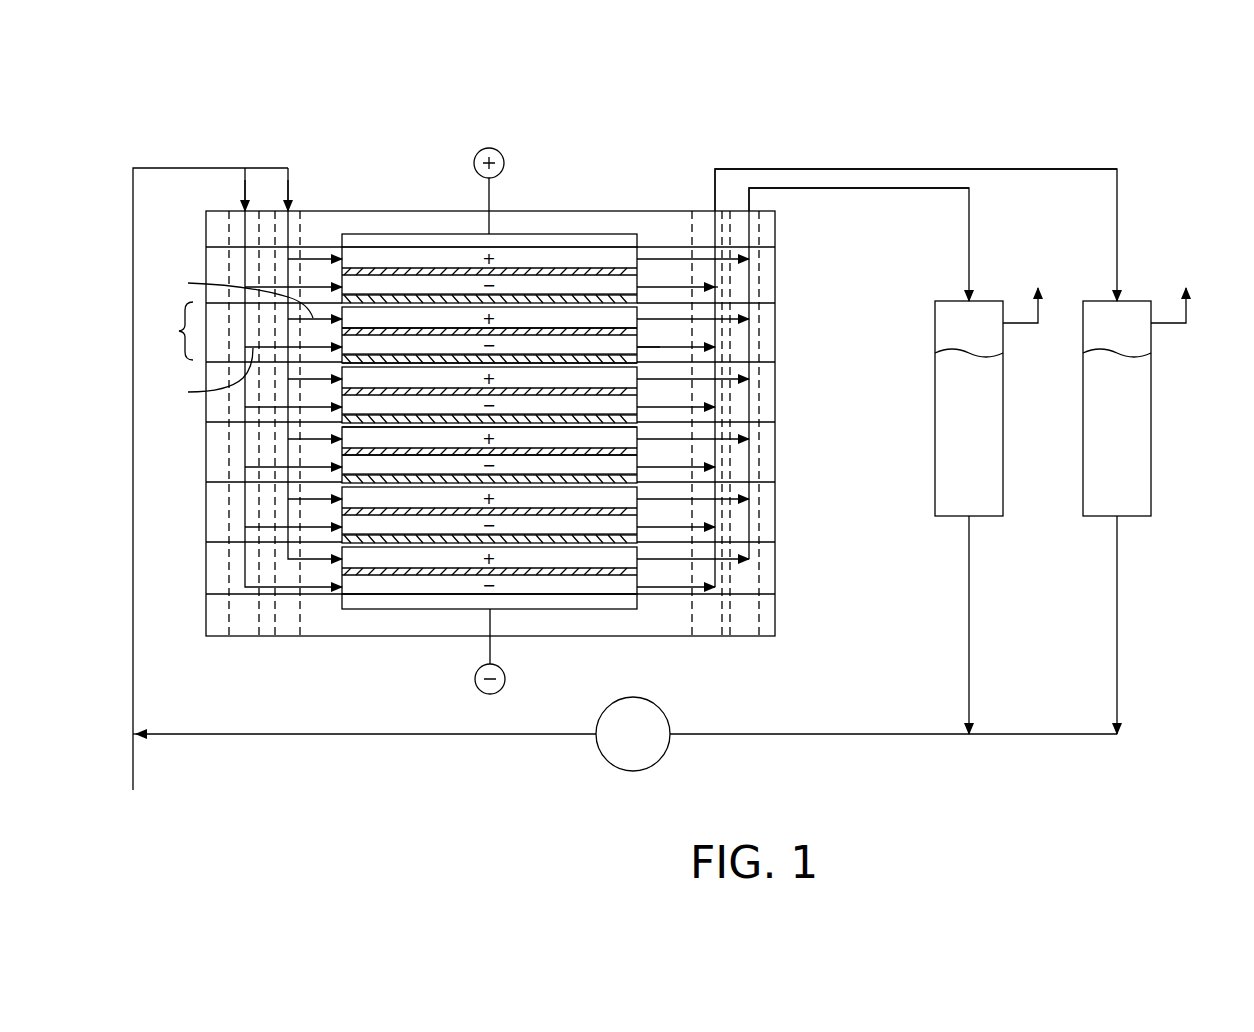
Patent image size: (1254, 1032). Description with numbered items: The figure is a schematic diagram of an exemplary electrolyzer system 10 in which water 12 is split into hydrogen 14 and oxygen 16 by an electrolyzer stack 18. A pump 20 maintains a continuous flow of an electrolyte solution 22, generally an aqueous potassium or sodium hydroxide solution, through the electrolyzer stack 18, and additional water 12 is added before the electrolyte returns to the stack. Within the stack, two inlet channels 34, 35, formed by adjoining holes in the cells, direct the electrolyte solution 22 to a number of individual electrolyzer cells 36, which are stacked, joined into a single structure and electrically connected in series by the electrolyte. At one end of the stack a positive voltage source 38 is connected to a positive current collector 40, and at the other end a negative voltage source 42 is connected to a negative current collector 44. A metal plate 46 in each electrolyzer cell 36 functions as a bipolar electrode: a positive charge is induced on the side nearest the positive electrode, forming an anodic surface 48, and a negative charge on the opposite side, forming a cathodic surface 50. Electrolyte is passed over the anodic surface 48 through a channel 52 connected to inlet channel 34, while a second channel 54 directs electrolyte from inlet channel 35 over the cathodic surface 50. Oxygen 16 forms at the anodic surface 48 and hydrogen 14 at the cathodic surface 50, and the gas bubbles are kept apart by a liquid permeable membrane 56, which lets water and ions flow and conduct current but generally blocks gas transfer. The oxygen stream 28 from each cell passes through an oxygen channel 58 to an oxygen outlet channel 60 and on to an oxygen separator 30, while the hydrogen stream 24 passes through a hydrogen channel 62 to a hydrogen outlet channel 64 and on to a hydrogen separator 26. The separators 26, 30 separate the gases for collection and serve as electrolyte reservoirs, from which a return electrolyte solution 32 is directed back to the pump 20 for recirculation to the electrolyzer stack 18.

The electrolyzer system 10 is at (212, 108).
The water 12 is at (160, 829).
The hydrogen 14 is at (1200, 247).
The oxygen 16 is at (1050, 247).
The electrolyzer stack 18 is at (362, 211).
The pump 20 is at (657, 699).
The electrolyte solution 22 is at (182, 168).
The hydrogen stream 24 is at (820, 169).
The hydrogen separator 26 is at (1151, 410).
The oxygen stream 28 is at (886, 188).
The oxygen separator 30 is at (935, 410).
The return electrolyte solution 32 is at (833, 732).
The inlet channel 34 is at (293, 213).
The inlet channel 35 is at (254, 213).
The electrolyzer cell 36 is at (170, 331).
The positive voltage source 38 is at (495, 197).
The positive current collector 40 is at (592, 234).
The negative voltage source 42 is at (492, 650).
The negative current collector 44 is at (407, 600).
The metal plate 46 is at (617, 326).
The anodic surface 48 is at (618, 438).
The cathodic surface 50 is at (613, 463).
The channel 52 is at (236, 294).
The second channel 54 is at (205, 376).
The liquid permeable membrane 56 is at (620, 360).
The oxygen channel 58 is at (720, 317).
The oxygen outlet channel 60 is at (742, 213).
The hydrogen channel 62 is at (672, 346).
The hydrogen outlet channel 64 is at (702, 212).